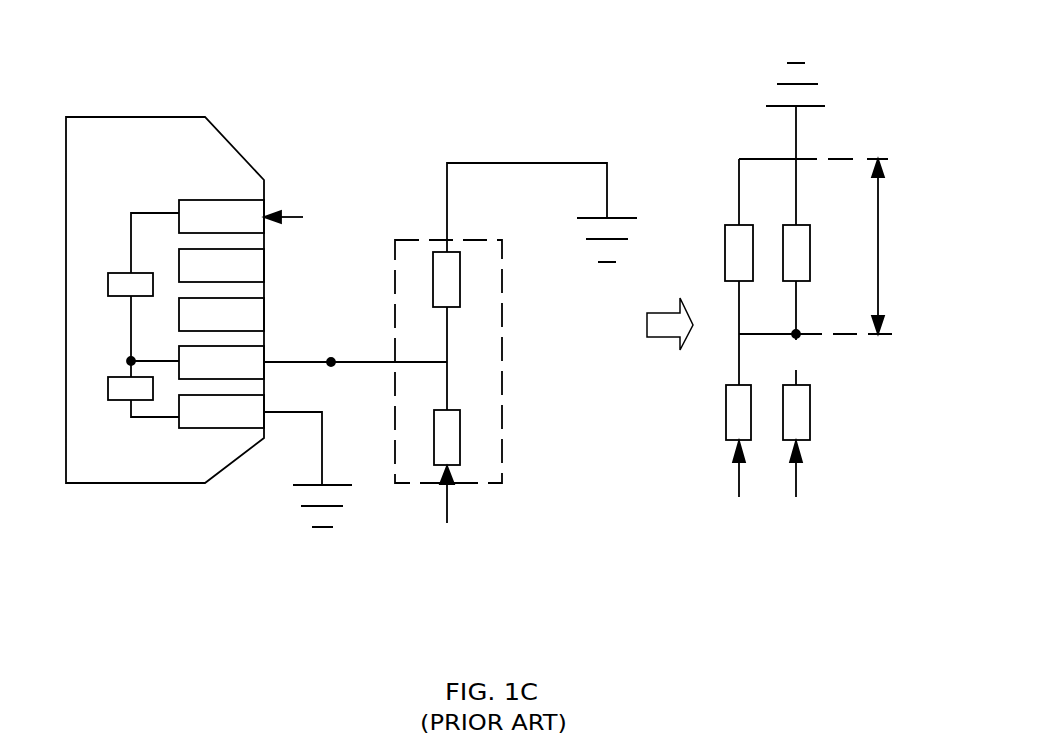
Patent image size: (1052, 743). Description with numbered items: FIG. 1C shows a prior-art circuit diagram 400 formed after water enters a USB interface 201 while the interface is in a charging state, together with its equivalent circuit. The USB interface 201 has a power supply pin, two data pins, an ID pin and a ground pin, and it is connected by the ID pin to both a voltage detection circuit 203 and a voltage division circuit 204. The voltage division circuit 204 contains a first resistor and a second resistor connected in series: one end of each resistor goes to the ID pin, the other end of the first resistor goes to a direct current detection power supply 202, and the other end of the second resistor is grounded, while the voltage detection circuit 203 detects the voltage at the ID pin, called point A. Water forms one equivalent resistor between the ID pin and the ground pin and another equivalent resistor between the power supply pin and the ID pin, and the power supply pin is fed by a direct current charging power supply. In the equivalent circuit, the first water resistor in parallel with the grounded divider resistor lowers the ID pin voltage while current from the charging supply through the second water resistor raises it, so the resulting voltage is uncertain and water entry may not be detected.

The circuit diagram 400 is at (492, 47).
The USB interface 201 is at (240, 155).
The direct current detection power supply 202 is at (646, 521).
The voltage detection circuit 203 is at (331, 362).
The voltage division circuit 204 is at (502, 372).